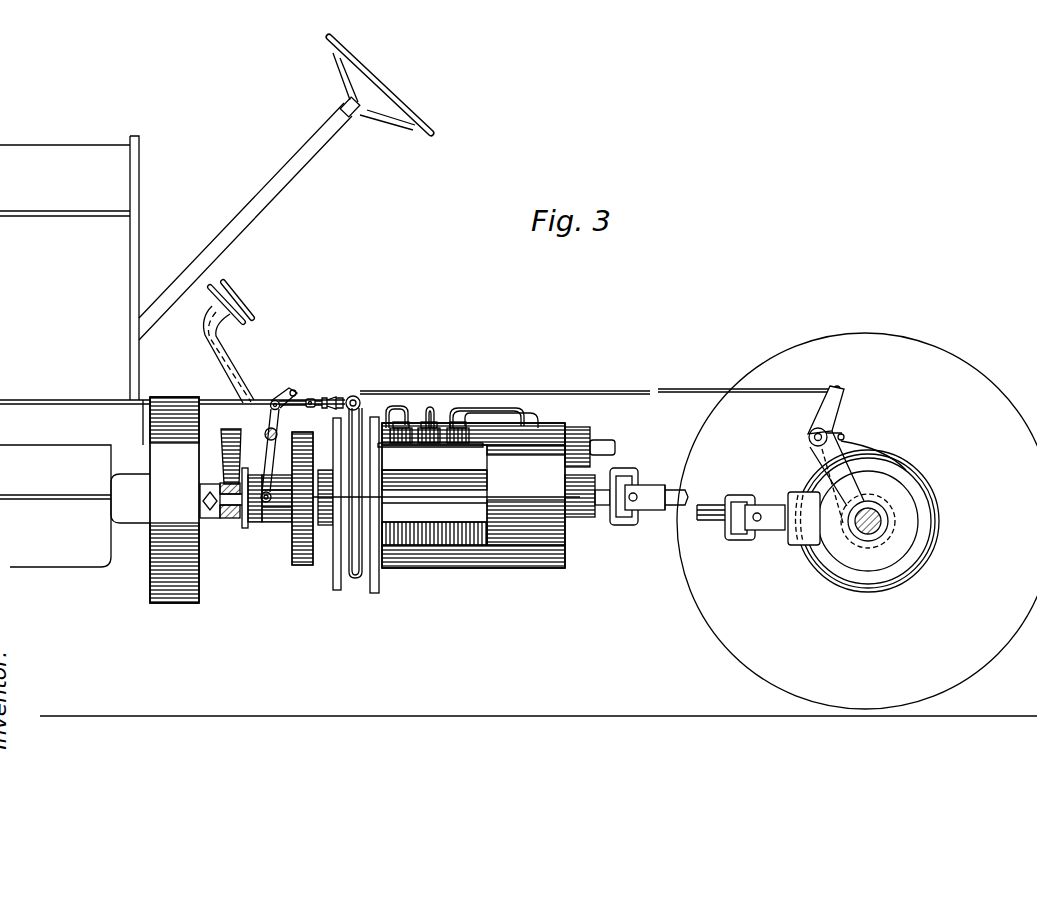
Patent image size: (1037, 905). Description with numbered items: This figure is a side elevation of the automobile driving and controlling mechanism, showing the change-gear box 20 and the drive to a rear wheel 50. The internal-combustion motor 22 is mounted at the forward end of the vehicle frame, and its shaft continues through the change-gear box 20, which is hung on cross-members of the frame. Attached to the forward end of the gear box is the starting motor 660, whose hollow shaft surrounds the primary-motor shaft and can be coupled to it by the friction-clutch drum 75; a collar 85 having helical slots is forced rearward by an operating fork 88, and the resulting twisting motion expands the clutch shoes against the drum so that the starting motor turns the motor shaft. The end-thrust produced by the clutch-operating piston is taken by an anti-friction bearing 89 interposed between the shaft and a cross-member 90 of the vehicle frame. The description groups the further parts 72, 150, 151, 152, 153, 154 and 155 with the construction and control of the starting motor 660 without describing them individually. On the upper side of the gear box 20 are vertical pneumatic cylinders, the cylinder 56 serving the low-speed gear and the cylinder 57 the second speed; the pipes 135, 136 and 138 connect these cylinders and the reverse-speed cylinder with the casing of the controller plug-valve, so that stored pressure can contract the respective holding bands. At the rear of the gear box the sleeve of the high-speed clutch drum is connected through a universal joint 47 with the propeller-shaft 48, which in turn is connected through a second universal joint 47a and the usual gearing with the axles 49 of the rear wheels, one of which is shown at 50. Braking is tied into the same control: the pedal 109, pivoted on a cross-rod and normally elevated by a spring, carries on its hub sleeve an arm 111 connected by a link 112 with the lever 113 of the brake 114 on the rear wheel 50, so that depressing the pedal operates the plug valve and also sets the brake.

The change-gear box 20 is at (532, 561).
The internal-combustion motor 22 is at (60, 567).
The universal joint 47 is at (643, 516).
The universal joint 47a is at (755, 532).
The propeller-shaft 48 is at (712, 504).
The axles of the rear wheels 49 is at (855, 538).
The rear wheel 50 is at (812, 338).
The cylinder for the low-speed gear 56 is at (404, 432).
The cylinder for the second-speed 57 is at (468, 428).
The strap 72 is at (357, 578).
The friction-clutch drum 75 is at (305, 565).
The collar 85 is at (278, 523).
The operating fork 88 is at (268, 461).
The anti-friction bearing 89 is at (255, 524).
The cross-member of the vehicle frame 90 is at (232, 518).
The pedal 109 is at (238, 354).
The arm 111 is at (287, 398).
The link 112 is at (628, 389).
The lever of the brake 113 is at (843, 415).
The brake 114 is at (940, 525).
The pipe 135 is at (396, 410).
The pipe 136 is at (487, 408).
The pipe 138 is at (438, 410).
The cylinder 150 is at (392, 410).
The yoke 151 is at (353, 395).
The turnbuckle 152 is at (324, 401).
The link 153 is at (302, 393).
The lever 154 is at (243, 403).
The pedal arm 155 is at (203, 336).
The starting motor 660 is at (332, 590).